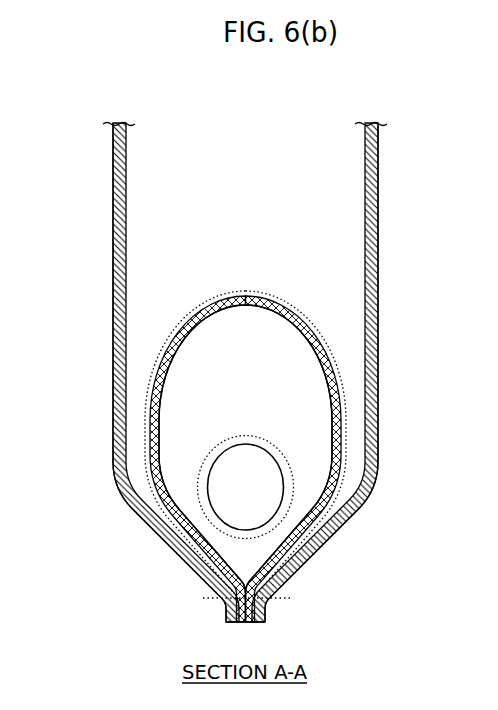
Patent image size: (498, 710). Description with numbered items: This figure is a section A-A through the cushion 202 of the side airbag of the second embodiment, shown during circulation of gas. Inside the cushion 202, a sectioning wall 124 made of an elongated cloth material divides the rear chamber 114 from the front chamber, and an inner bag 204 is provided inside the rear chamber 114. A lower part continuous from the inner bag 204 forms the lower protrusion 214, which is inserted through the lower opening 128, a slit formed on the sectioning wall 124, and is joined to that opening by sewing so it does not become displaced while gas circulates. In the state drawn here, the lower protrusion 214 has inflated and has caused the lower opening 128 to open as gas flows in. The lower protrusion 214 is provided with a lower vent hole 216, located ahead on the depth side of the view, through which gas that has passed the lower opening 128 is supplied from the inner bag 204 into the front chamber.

The cushion 202 is at (72, 127).
The rear chamber 114 is at (111, 205).
The sectioning wall 124 is at (338, 291).
The inner bag 204 is at (212, 299).
The lower opening 128 is at (265, 294).
The lower protrusion 214 is at (227, 364).
The lower vent hole 216 is at (224, 463).